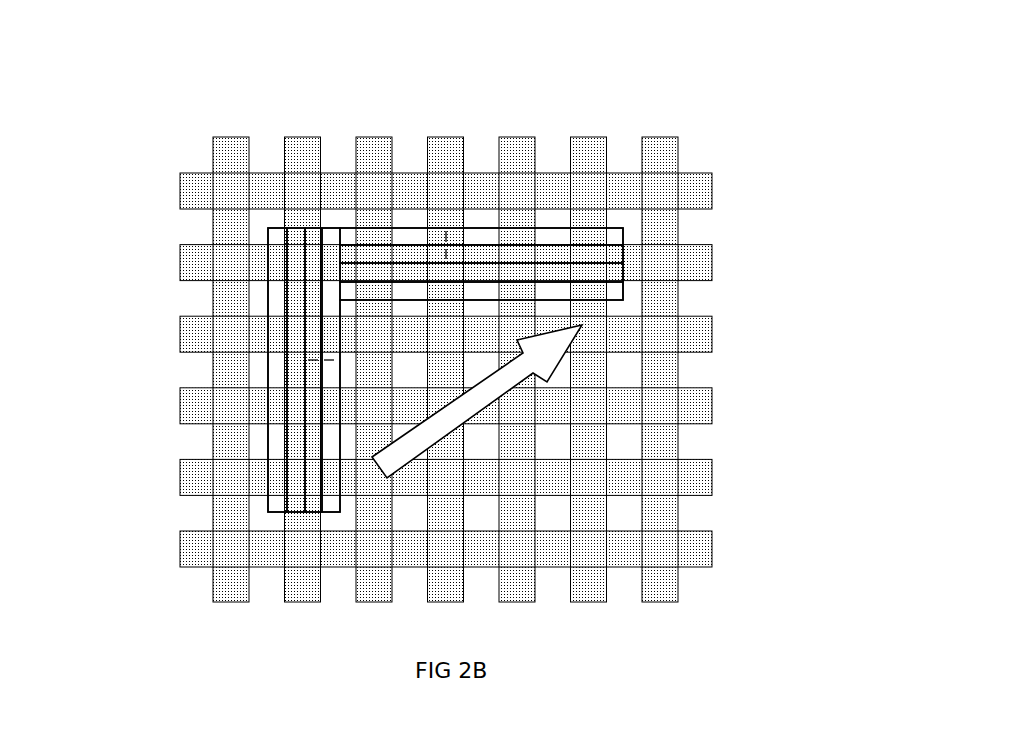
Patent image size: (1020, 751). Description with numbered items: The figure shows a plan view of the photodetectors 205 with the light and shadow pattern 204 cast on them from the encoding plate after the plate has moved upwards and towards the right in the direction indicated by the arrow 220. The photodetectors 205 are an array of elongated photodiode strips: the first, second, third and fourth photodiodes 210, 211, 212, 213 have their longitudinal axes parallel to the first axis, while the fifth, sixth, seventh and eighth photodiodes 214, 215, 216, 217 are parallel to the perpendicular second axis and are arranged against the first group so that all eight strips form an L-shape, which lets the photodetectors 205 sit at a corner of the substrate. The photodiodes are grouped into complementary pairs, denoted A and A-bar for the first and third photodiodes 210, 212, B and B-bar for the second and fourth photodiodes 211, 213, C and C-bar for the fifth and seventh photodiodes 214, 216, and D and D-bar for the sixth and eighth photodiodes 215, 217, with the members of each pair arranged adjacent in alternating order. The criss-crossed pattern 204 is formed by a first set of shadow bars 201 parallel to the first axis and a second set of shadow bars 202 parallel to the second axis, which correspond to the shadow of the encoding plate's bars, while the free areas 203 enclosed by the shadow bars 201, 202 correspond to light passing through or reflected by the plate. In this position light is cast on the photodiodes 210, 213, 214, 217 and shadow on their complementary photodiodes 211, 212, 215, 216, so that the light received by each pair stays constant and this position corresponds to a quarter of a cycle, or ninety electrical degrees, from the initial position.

The first set of shadow bars 201 is at (232, 155).
The second set of shadow bars 202 is at (200, 191).
The free areas 203 is at (268, 581).
The criss-crossed light and shadow pattern 204 is at (444, 322).
The photodetectors 205 is at (426, 268).
The first photodiode 210 is at (280, 420).
The second photodiode 211 is at (298, 438).
The third photodiode 212 is at (315, 456).
The fourth photodiode 213 is at (333, 474).
The fifth photodiode 214 is at (533, 237).
The sixth photodiode 215 is at (552, 255).
The seventh photodiode 216 is at (570, 273).
The eighth photodiode 217 is at (587, 292).
The arrow 220 is at (463, 403).